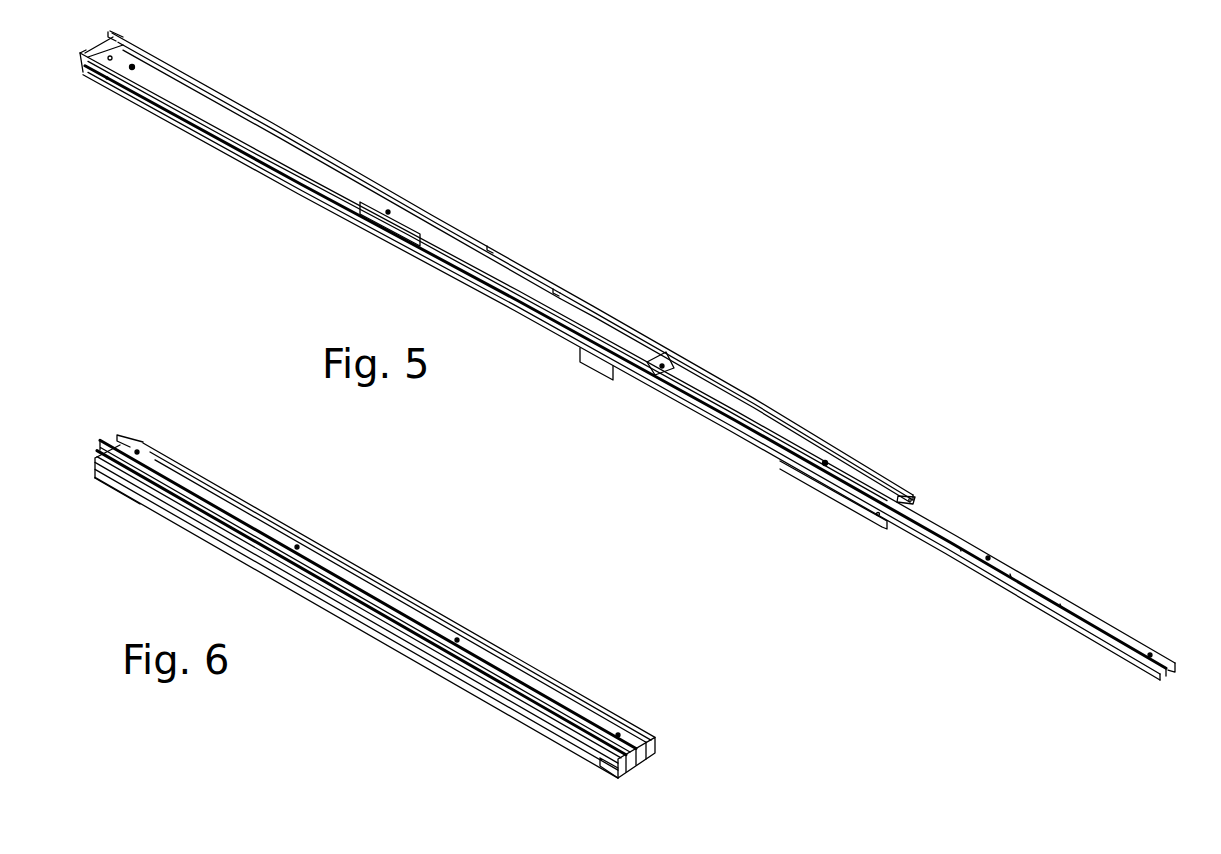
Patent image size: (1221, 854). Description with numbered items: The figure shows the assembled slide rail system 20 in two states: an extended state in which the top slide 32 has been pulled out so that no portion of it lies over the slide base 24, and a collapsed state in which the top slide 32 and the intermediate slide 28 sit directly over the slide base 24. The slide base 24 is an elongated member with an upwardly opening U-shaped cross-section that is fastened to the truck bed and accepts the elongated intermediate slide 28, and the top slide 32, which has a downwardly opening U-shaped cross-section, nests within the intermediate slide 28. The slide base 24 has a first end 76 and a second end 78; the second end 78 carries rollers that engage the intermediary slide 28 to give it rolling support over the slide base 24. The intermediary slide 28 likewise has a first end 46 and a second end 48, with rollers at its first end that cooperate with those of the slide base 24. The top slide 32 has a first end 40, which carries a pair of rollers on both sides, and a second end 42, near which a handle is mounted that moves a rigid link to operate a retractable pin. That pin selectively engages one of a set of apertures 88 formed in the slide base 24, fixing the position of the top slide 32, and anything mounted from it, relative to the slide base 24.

In FIG. 5, the slide rail system 20 is at (685, 488).
In FIG. 6, the slide rail system 20 is at (205, 441).
In FIG. 5, the slide base 24 is at (298, 137).
In FIG. 6, the slide base 24 is at (322, 602).
In FIG. 5, the intermediate slide 28 is at (723, 380).
In FIG. 5, the top slide 32 is at (1013, 567).
In FIG. 6, the top slide 32 is at (477, 650).
In FIG. 5, the first end 40 is at (668, 365).
In FIG. 5, the second end 42 is at (1127, 658).
In FIG. 5, the first end 46 is at (367, 205).
In FIG. 5, the second end 48 is at (908, 495).
In FIG. 5, the first end 76 is at (120, 92).
In FIG. 6, the first end 76 is at (128, 488).
In FIG. 5, the second end 78 is at (583, 350).
In FIG. 6, the second end 78 is at (600, 763).
In FIG. 5, the apertures 88 is at (200, 82).